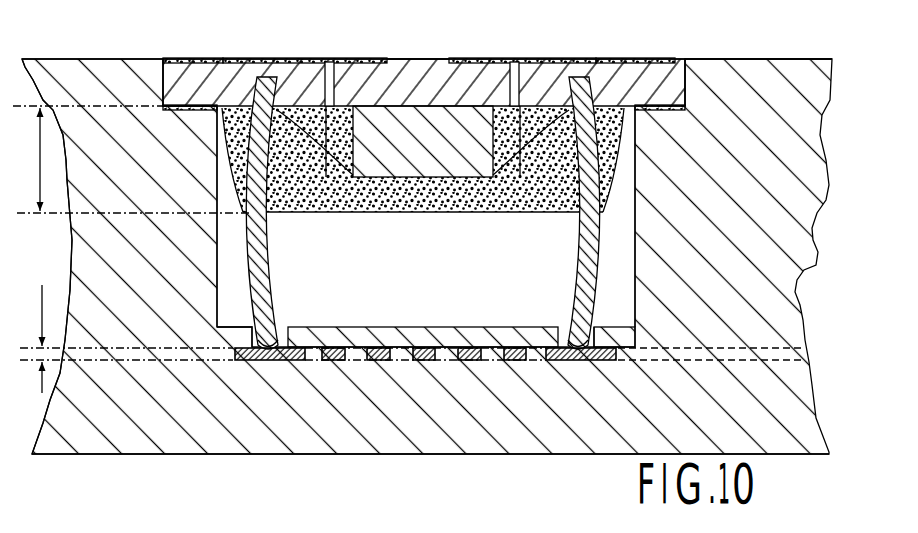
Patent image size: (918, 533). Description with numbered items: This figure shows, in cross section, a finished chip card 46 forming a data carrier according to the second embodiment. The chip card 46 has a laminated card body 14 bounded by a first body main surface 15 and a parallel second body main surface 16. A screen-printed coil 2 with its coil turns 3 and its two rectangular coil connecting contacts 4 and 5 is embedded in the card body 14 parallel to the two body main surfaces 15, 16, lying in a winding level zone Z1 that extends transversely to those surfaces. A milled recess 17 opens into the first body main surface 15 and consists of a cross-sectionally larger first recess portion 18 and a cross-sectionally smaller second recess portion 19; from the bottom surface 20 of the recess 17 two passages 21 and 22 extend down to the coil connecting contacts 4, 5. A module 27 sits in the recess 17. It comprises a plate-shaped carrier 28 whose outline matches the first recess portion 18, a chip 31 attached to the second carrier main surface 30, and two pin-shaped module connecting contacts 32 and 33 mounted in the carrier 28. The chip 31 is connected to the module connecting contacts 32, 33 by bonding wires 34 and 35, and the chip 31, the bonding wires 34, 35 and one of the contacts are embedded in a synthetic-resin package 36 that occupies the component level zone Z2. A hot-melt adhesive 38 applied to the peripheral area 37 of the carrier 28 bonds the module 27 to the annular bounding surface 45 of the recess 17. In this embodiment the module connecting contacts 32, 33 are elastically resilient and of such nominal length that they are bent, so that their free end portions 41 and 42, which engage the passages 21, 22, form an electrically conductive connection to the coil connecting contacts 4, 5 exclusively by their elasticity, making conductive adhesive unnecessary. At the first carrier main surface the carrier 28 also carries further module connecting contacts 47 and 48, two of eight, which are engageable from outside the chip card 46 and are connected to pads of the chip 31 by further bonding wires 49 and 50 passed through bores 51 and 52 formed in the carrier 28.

The coil 2 is at (244, 368).
The coil turns 3 is at (328, 361).
The coil connecting contact 4 is at (263, 360).
The coil connecting contact 5 is at (612, 365).
The card body 14 is at (796, 220).
The first body main surface 15 is at (70, 59).
The second body main surface 16 is at (177, 455).
The recess 17 is at (632, 117).
The first recess portion 18 is at (687, 82).
The second recess portion 19 is at (637, 240).
The bottom surface 20 is at (403, 327).
The passage 21 is at (277, 337).
The passage 22 is at (576, 317).
The module 27 is at (240, 223).
The carrier 28 is at (412, 60).
The second carrier main surface 30 is at (233, 106).
The chip 31 is at (428, 130).
The module connecting contact 32 is at (258, 272).
The module connecting contact 33 is at (586, 237).
The bonding wire 34 is at (322, 182).
The bonding wire 35 is at (523, 185).
The package 36 is at (389, 203).
The peripheral area 37 is at (180, 105).
The hot-melt adhesive 38 is at (176, 61).
The free end portion 41 is at (270, 360).
The free end portion 42 is at (576, 361).
The annular bounding surface 45 is at (190, 112).
The chip card 46 is at (744, 43).
The further module connecting contact 47 is at (253, 59).
The further module connecting contact 48 is at (593, 59).
The further bonding wire 49 is at (360, 63).
The further bonding wire 50 is at (503, 100).
The bore 51 is at (320, 60).
The bore 52 is at (530, 60).
The winding level zone Z1 is at (42, 318).
The component level zone Z2 is at (40, 172).